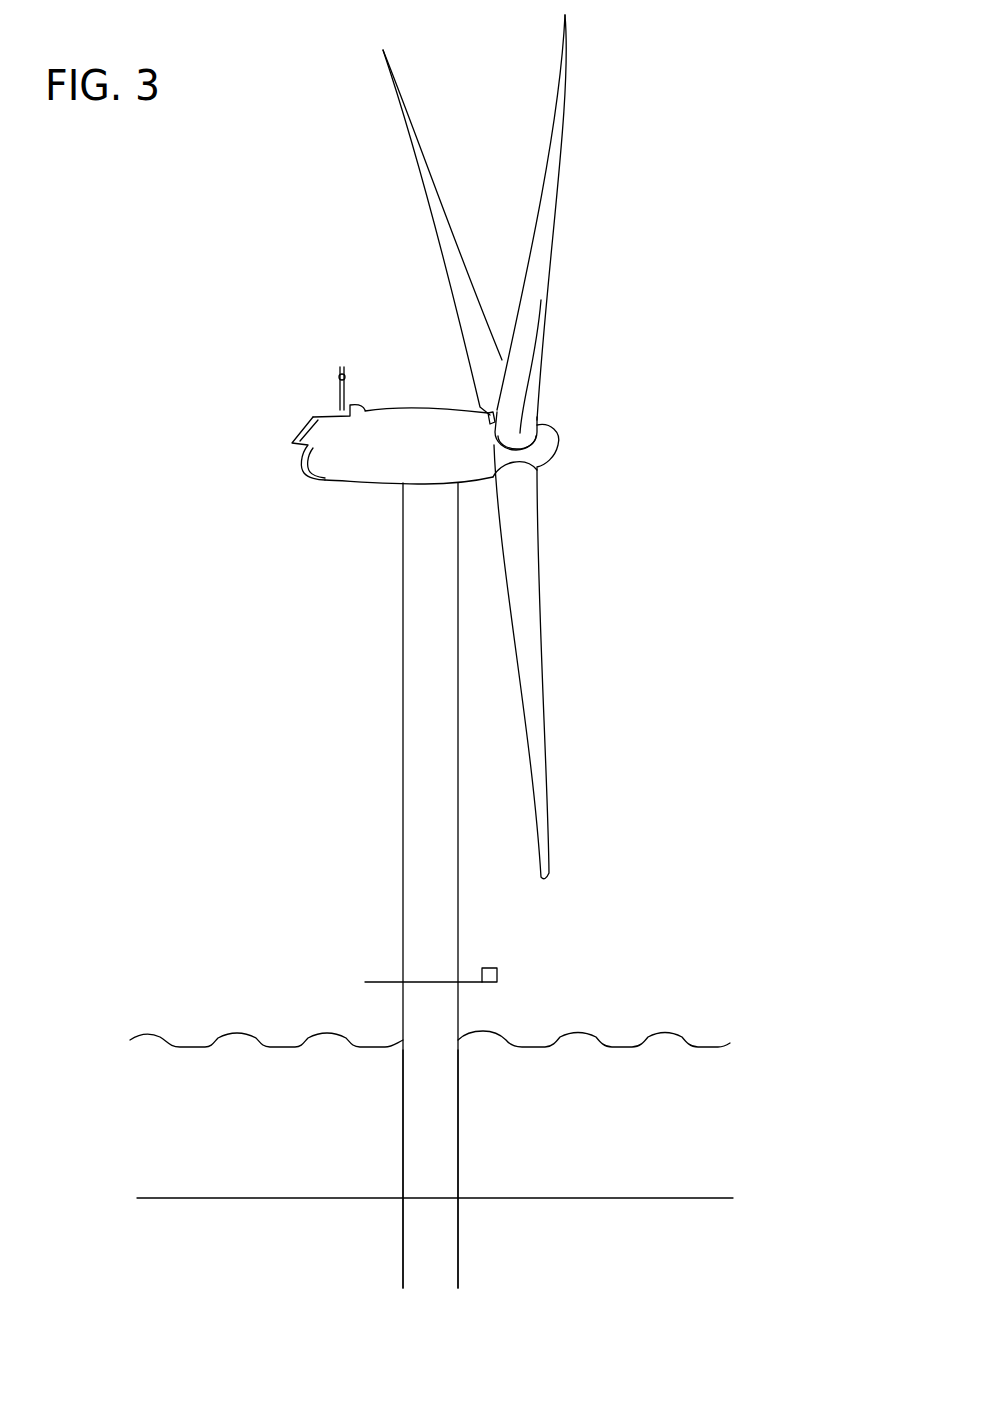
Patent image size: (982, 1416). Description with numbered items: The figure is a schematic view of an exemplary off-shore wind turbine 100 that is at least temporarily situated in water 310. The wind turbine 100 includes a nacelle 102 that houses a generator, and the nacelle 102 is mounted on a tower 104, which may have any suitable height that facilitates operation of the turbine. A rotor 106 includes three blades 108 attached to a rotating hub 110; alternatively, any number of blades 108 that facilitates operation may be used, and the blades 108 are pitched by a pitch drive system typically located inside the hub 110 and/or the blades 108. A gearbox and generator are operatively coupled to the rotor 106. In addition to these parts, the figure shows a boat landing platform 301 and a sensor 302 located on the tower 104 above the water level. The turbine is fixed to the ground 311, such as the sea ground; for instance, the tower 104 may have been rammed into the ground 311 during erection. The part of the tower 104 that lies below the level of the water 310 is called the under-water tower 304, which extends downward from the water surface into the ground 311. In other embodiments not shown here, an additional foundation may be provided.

The wind turbine 100 is at (263, 297).
The nacelle 102 is at (340, 483).
The tower 104 is at (403, 730).
The rotor 106 is at (602, 212).
The blades 108 is at (415, 126).
The rotating hub 110 is at (557, 445).
The boat landing platform 301 is at (392, 982).
The sensor 302 is at (493, 965).
The under-water tower 304 is at (403, 1087).
The water 310 is at (613, 1143).
The ground 311 is at (602, 1253).